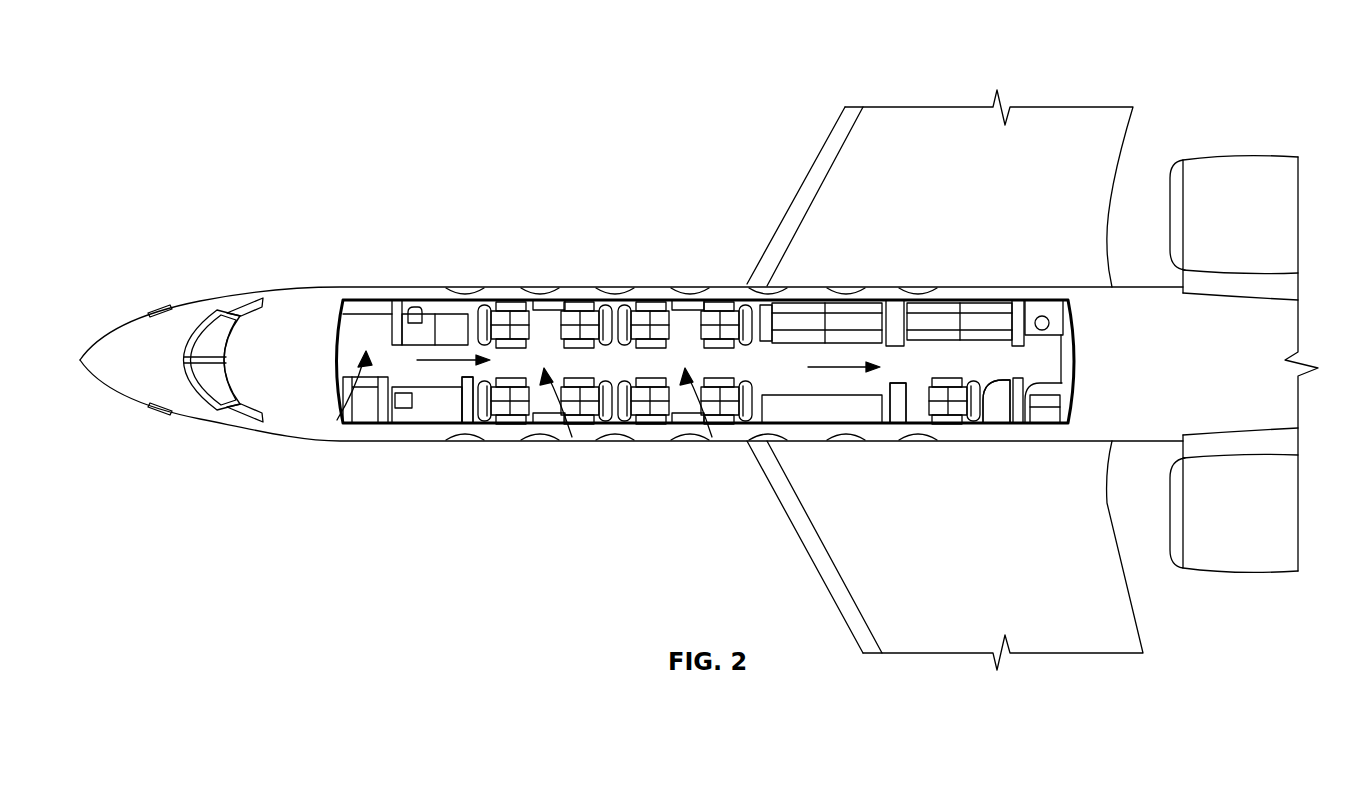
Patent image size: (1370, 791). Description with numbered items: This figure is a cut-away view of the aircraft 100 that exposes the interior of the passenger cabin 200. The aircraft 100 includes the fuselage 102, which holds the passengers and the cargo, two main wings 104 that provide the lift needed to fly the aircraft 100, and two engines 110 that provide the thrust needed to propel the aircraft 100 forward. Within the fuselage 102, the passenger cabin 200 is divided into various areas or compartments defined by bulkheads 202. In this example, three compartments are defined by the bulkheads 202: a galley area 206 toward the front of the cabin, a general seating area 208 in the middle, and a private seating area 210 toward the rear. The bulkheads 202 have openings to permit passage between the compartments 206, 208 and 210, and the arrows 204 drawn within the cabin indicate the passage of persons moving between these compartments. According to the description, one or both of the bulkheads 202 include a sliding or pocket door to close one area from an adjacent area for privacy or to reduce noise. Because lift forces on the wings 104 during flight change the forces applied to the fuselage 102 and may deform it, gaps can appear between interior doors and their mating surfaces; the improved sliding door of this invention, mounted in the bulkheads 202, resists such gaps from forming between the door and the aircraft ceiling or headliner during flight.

The aircraft 100 is at (310, 303).
The fuselage 102 is at (508, 293).
The main wings 104 is at (1060, 122).
The engines 110 is at (1262, 170).
The passenger cabin 200 is at (572, 437).
The bulkheads 202 is at (466, 413).
The aisle flow direction 204 is at (470, 363).
The galley area 206 is at (337, 420).
The general seating area 208 is at (712, 437).
The private seating area 210 is at (1007, 363).